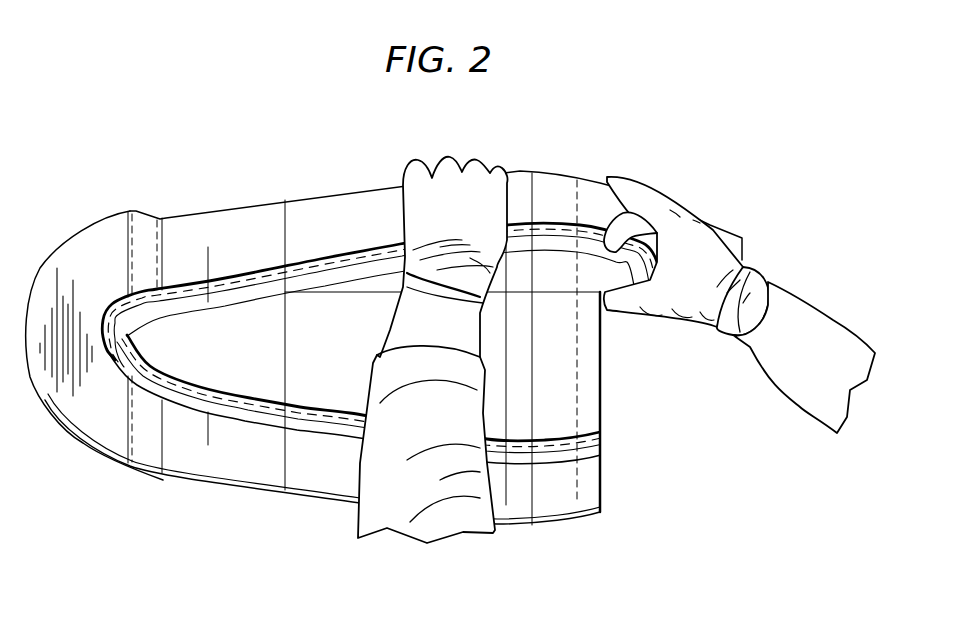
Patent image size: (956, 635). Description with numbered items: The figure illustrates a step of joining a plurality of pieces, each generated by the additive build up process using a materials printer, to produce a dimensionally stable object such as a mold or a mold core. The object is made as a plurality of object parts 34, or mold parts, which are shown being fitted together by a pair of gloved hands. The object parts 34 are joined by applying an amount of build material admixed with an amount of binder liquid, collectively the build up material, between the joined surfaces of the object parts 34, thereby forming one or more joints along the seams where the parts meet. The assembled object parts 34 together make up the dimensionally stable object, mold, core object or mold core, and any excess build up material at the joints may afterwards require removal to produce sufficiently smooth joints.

The object parts 34 is at (315, 477).